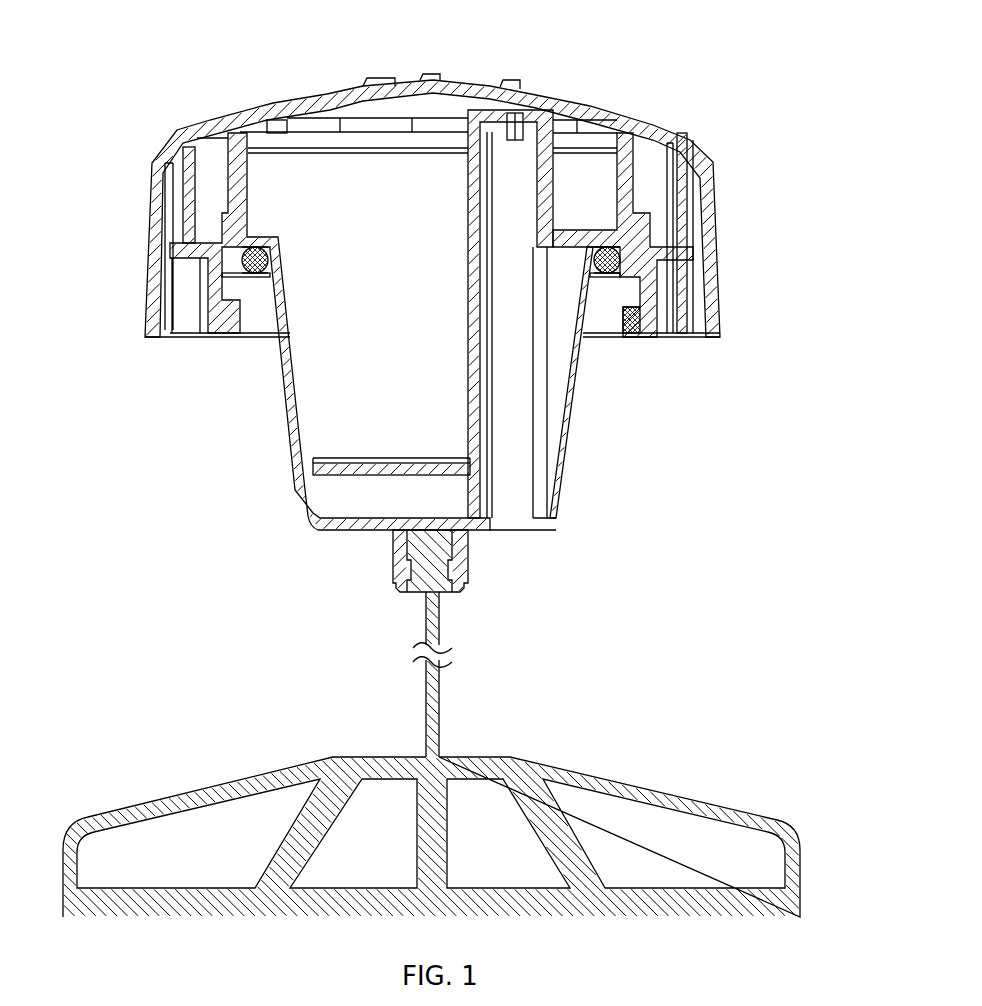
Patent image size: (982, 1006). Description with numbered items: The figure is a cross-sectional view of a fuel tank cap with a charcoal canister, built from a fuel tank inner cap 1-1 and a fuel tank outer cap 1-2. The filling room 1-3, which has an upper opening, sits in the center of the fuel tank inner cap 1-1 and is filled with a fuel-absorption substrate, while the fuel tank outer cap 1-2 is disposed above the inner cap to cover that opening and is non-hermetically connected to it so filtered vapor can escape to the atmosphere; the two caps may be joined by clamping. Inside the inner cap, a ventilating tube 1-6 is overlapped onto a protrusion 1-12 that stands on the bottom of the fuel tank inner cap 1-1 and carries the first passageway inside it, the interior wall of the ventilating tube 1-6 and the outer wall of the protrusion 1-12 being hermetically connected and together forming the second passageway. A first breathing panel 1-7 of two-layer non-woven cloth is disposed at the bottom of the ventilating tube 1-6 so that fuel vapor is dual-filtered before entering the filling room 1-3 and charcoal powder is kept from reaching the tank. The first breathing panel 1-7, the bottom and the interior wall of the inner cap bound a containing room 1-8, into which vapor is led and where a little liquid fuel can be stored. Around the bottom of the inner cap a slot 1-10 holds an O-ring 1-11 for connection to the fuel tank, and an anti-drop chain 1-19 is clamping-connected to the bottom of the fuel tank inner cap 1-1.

The fuel tank inner cap 1-1 is at (630, 223).
The fuel tank outer cap 1-2 is at (613, 120).
The filling room 1-3 is at (273, 192).
The ventilating tube 1-6 is at (470, 215).
The first breathing panel 1-7 is at (347, 460).
The containing room 1-8 is at (383, 498).
The slot 1-10 is at (612, 298).
The O-ring 1-11 is at (620, 263).
The protrusion 1-12 is at (490, 470).
The anti-drop chain 1-19 is at (513, 757).